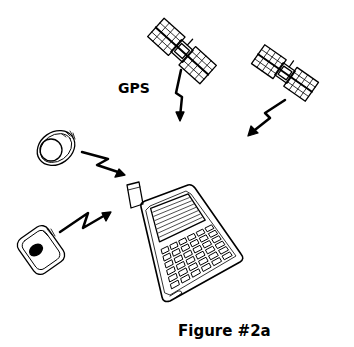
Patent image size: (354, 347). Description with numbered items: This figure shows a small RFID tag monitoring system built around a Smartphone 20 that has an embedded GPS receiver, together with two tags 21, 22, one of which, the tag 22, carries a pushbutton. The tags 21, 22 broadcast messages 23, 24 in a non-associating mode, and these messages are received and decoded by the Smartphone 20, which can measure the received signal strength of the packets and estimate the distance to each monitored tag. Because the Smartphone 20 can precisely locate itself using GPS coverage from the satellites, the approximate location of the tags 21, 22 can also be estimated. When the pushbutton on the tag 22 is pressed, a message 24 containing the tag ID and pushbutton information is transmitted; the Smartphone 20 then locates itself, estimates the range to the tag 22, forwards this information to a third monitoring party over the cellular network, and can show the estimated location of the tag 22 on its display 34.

The Smartphone 20 is at (213, 242).
The tag 21 is at (67, 167).
The tag 22 is at (55, 262).
The message 23 is at (100, 168).
The message 24 is at (87, 228).
The display 34 is at (198, 203).